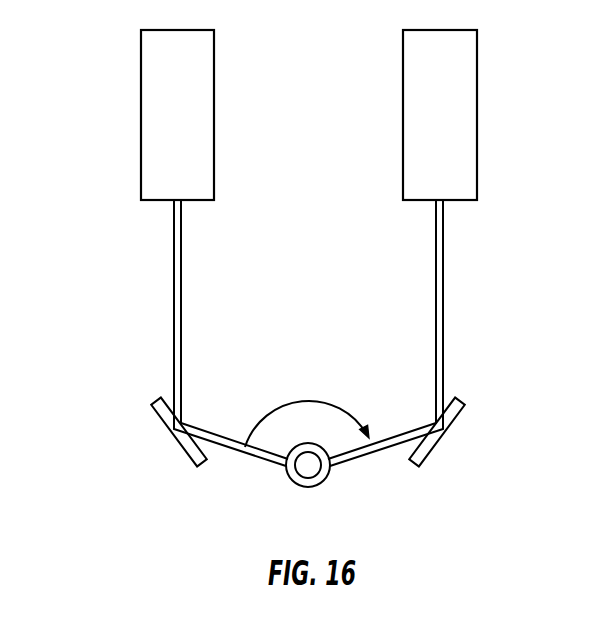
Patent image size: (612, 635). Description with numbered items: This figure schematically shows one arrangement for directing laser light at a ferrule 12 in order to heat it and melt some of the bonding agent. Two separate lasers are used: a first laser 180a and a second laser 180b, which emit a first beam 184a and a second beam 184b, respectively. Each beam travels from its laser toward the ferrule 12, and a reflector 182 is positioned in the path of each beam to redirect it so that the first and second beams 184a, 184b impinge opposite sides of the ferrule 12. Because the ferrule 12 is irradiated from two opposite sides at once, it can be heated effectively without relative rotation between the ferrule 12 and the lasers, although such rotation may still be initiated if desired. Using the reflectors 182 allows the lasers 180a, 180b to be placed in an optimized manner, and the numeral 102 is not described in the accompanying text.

The first laser 180a is at (141, 85).
The second laser 180b is at (403, 85).
The first beam 184a is at (181, 297).
The second beam 184b is at (443, 302).
The reflector 182 is at (158, 419).
The pivot shaft 102 is at (304, 468).
The ferrule 12 is at (327, 490).